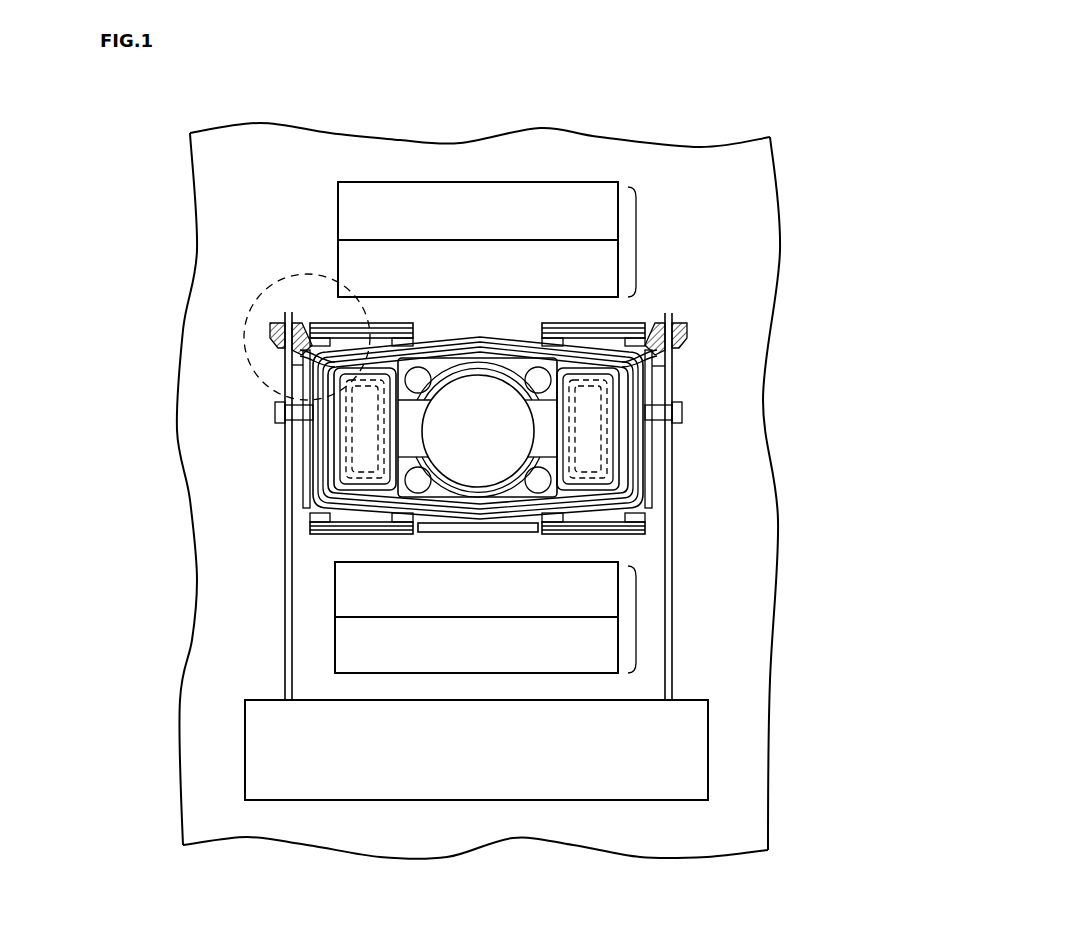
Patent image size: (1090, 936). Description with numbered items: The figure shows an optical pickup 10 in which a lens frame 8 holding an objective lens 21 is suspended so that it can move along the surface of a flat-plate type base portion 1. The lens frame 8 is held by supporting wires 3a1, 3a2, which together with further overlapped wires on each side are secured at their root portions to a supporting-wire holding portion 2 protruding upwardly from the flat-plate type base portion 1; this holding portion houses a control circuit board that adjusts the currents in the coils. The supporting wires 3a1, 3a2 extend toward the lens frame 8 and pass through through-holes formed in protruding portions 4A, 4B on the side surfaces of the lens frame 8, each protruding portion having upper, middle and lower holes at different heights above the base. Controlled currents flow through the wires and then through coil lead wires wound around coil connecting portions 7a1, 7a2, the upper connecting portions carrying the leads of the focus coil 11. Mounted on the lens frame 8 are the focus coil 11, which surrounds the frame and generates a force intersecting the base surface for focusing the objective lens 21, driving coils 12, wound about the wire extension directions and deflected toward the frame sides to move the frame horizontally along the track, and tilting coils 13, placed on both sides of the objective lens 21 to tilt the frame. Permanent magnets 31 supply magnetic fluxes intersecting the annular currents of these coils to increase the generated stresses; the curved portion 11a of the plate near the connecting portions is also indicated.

The flat-plate type base portion 1 is at (281, 148).
The supporting-wire holding portion 2 is at (342, 778).
The supporting wire 3a1 is at (285, 657).
The supporting wire 3a2 is at (672, 657).
The protruding portion 4A is at (275, 412).
The protruding portion 4B is at (682, 413).
The coil connecting portion 7a1 is at (264, 336).
The coil connecting portion 7a2 is at (695, 338).
The lens frame 8 is at (340, 397).
The optical pickup 10 is at (320, 312).
The focus coil 11 is at (641, 480).
The bent portion of yoke plate 11a is at (298, 340).
The driving coil 12 is at (393, 326).
The tilting coil 13 is at (315, 432).
The objective lens 21 is at (442, 437).
The permanent magnet 31 is at (636, 242).